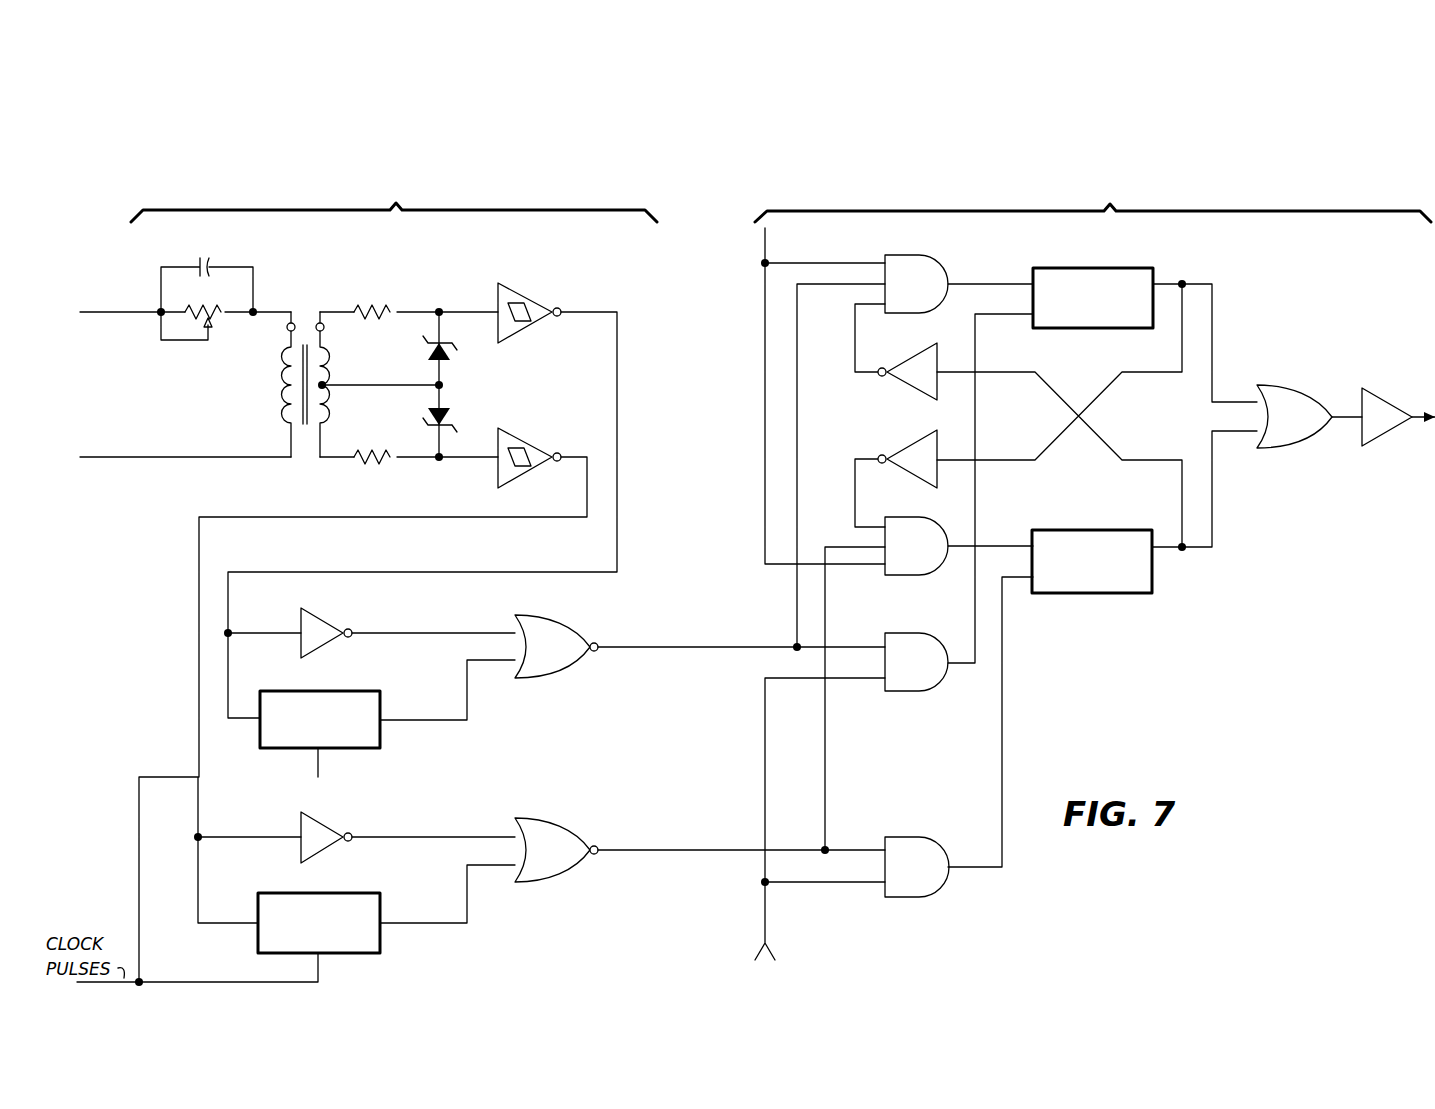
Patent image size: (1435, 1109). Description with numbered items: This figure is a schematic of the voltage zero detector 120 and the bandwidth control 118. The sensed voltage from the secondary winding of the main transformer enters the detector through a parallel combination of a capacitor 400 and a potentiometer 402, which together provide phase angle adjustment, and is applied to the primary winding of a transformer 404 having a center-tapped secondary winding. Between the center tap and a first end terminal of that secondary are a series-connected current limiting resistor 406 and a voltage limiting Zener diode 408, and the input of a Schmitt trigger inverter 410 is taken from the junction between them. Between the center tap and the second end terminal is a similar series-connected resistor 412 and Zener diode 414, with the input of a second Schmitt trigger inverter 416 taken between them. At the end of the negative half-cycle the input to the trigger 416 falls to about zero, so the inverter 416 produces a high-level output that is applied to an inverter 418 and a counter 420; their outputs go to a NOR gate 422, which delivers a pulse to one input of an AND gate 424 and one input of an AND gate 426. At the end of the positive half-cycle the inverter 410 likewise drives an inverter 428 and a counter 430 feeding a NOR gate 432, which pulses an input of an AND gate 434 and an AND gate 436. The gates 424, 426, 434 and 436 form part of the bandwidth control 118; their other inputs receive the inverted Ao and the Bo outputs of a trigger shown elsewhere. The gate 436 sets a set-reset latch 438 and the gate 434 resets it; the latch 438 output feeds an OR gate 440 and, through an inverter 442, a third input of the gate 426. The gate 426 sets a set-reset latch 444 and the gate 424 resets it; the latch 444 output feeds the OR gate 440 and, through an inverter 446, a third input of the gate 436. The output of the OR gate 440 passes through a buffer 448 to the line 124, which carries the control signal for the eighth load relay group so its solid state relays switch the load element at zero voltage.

The voltage zero detector 120 is at (394, 195).
The bandwidth control 118 is at (1093, 195).
The line 124 is at (1420, 420).
The capacitor 400 is at (213, 256).
The potentiometer 402 is at (228, 325).
The transformer 404 is at (306, 326).
The current limiting resistor 406 is at (388, 305).
The voltage limiting Zener diode 408 is at (430, 351).
The Schmitt trigger inverter 410 is at (542, 300).
The resistor 412 is at (378, 464).
The Zener diode 414 is at (430, 418).
The second Schmitt trigger inverter 416 is at (535, 447).
The inverter 418 is at (340, 822).
The counter 420 is at (374, 893).
The NOR gate 422 is at (578, 828).
The AND gate 424 is at (932, 840).
The AND gate 426 is at (912, 576).
The inverter 428 is at (340, 620).
The counter 430 is at (366, 691).
The NOR gate 432 is at (578, 626).
The AND gate 434 is at (930, 688).
The AND gate 436 is at (938, 258).
The set-reset latch 438 is at (1120, 268).
The OR gate 440 is at (1282, 385).
The inverter 442 is at (916, 442).
The set-reset latch 444 is at (1153, 584).
The inverter 446 is at (910, 388).
The buffer 448 is at (1380, 388).